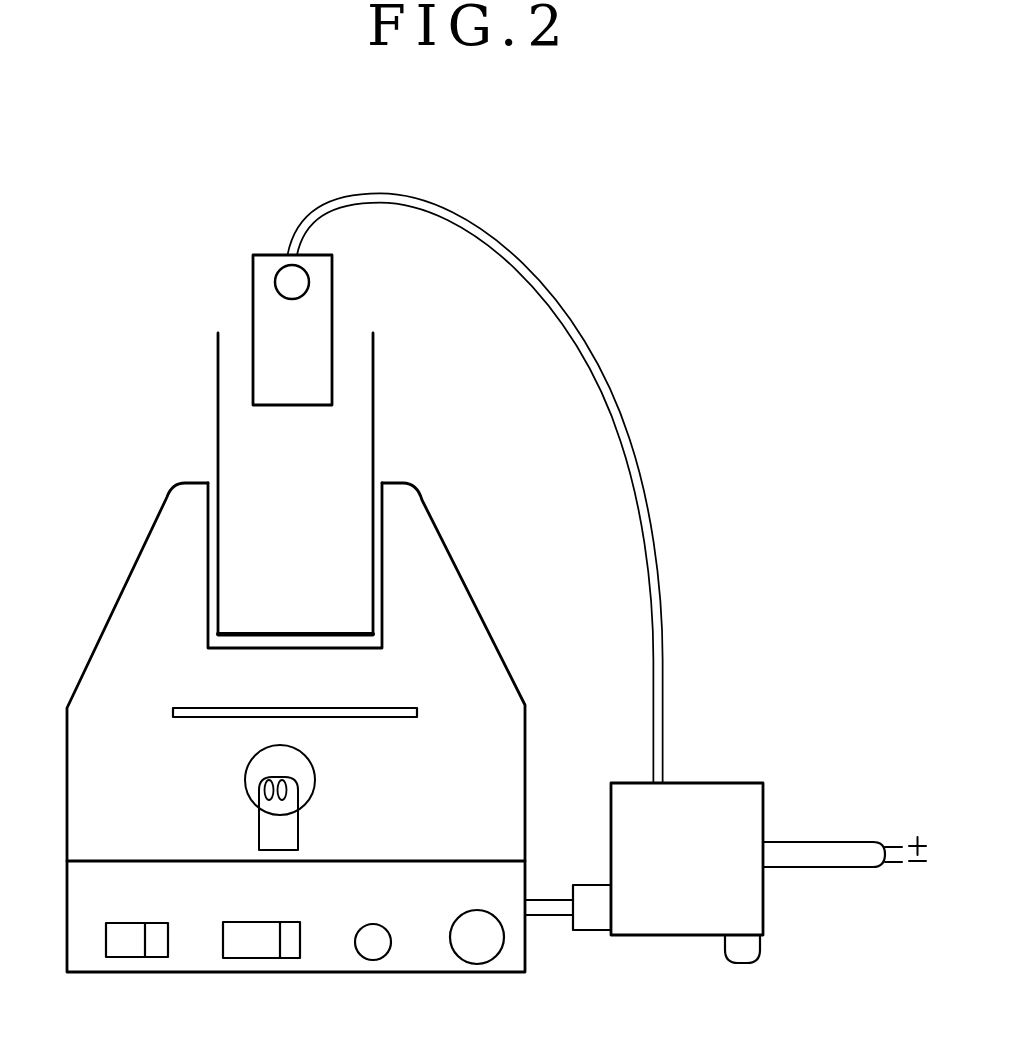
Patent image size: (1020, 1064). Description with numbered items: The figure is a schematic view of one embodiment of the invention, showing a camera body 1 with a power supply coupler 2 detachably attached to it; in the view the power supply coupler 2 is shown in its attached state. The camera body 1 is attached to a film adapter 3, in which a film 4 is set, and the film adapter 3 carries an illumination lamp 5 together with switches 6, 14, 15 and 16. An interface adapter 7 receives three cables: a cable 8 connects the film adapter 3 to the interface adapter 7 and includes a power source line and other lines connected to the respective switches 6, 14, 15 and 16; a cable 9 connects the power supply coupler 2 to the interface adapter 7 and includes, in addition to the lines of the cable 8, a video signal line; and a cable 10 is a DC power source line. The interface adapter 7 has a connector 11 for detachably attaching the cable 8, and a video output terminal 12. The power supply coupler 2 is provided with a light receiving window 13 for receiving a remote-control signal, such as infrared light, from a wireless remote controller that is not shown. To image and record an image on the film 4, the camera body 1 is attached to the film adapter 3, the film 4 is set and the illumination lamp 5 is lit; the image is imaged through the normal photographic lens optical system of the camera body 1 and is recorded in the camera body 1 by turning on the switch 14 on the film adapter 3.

The camera body 1 is at (247, 451).
The power supply coupler 2 is at (313, 310).
The film adapter 3 is at (105, 812).
The film 4 is at (207, 710).
The illumination lamp 5 is at (252, 789).
The switch 6 is at (132, 951).
The interface adapter 7 is at (666, 922).
The cable 8 is at (550, 910).
The cable 9 is at (661, 607).
The cable 10 is at (820, 850).
The connector 11 is at (593, 917).
The video output terminal 12 is at (742, 955).
The light receiving window 13 is at (284, 280).
The switch 14 is at (476, 947).
The switch 15 is at (372, 950).
The switch 16 is at (259, 949).